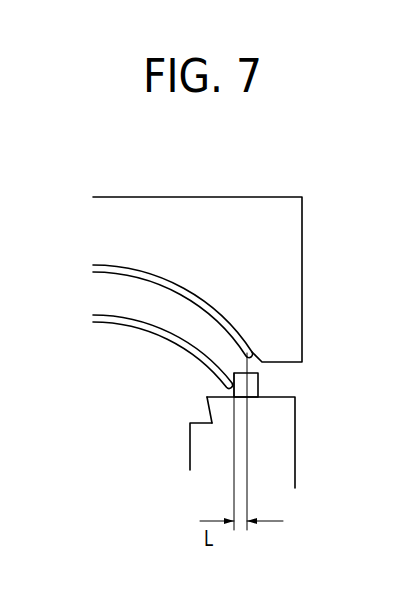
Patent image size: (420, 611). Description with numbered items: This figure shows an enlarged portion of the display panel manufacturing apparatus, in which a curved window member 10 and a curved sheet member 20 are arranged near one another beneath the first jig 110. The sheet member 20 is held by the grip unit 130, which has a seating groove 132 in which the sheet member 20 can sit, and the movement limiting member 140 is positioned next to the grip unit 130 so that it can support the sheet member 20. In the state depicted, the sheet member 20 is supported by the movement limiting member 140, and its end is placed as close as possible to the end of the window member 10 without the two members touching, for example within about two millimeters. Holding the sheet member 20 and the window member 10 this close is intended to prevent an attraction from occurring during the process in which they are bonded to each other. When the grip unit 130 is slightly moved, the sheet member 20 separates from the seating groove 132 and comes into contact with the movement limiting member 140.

The window member 10 is at (110, 269).
The sheet member 20 is at (108, 318).
The first jig 110 is at (288, 252).
The grip unit 130 is at (288, 423).
The seating groove 132 is at (201, 412).
The movement limiting member 140 is at (252, 384).